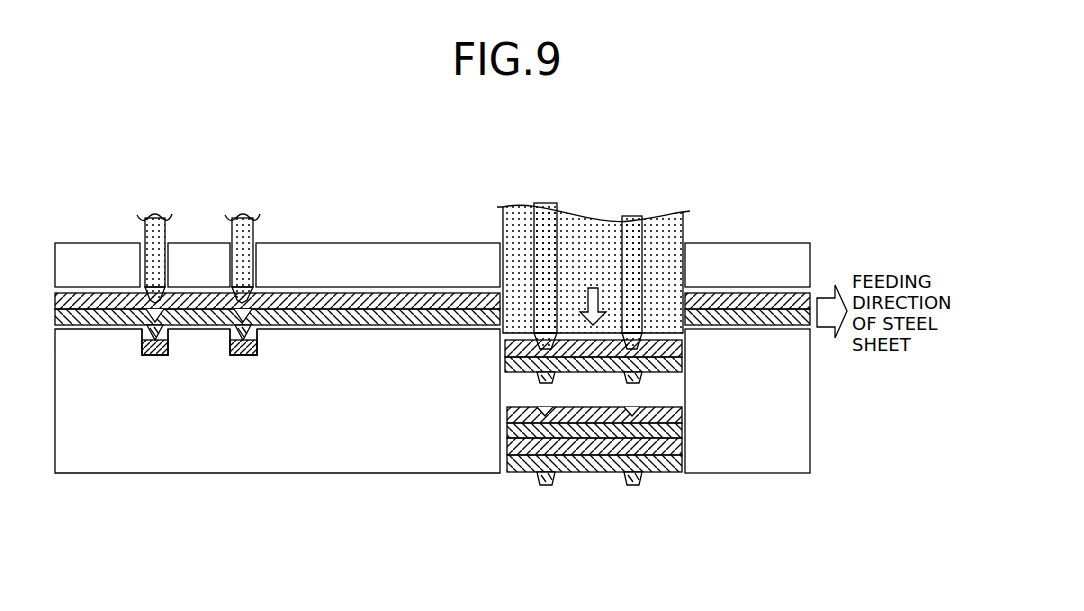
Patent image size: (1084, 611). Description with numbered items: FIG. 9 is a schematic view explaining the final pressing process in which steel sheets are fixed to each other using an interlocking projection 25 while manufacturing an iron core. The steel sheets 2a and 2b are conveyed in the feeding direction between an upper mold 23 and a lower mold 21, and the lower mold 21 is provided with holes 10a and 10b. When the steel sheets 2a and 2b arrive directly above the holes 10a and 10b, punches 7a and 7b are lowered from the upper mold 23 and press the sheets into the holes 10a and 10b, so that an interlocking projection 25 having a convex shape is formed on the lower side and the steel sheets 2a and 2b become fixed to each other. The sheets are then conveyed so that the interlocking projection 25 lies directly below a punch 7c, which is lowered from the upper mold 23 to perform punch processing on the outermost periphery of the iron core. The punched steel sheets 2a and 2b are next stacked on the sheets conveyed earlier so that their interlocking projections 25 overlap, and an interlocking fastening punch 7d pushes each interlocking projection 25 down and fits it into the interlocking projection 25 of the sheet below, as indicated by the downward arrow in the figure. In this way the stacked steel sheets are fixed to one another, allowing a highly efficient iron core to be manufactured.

The steel sheet 2a is at (77, 301).
The steel sheet 2b is at (120, 317).
The upper mold 23 is at (95, 253).
The lower mold 21 is at (475, 462).
The punch 7a is at (158, 230).
The punch 7b is at (250, 230).
The punch 7c is at (663, 238).
The interlocking fastening punch 7d is at (547, 218).
The hole 10a is at (145, 357).
The hole 10b is at (233, 357).
The interlocking projection 25 is at (152, 353).